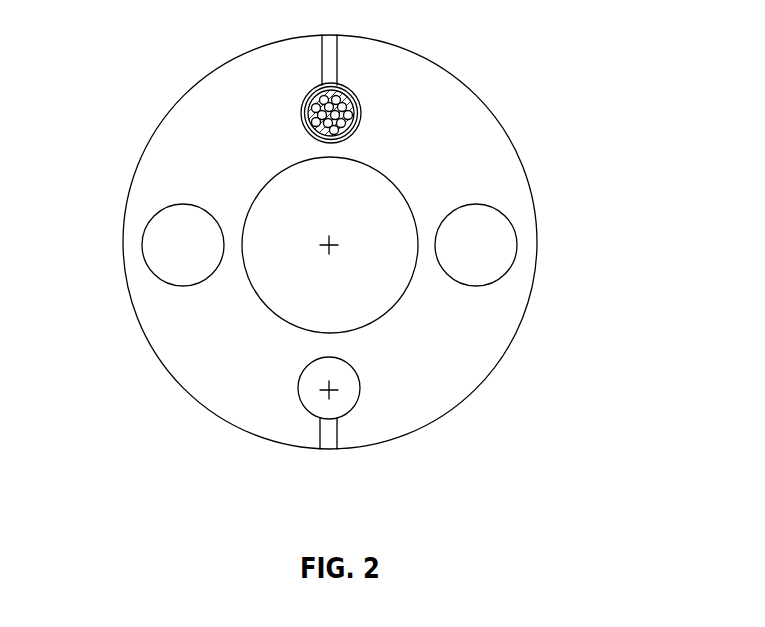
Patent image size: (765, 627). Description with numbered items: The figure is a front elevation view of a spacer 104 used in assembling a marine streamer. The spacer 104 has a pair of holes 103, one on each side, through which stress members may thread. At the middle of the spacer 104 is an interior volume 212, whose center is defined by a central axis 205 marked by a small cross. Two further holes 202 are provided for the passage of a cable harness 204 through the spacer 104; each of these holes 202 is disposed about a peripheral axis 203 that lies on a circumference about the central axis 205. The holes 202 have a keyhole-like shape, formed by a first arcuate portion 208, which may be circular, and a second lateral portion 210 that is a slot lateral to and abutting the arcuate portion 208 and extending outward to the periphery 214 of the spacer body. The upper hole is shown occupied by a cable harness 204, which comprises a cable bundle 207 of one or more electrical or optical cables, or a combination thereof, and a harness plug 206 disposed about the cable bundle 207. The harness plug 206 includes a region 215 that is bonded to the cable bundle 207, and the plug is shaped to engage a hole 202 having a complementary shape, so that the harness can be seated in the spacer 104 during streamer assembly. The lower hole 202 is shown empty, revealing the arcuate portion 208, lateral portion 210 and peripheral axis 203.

The spacer 104 is at (150, 57).
The holes 103 is at (153, 217).
The interior volume 212 is at (363, 304).
The central axis 205 is at (327, 246).
The holes 202 is at (304, 93).
The cable harness 204 is at (364, 117).
The harness plug 206 is at (352, 93).
The cable bundle 207 is at (305, 128).
The region 215 is at (322, 102).
The arcuate portion 208 is at (363, 386).
The peripheral axis 203 is at (326, 388).
The lateral portion 210 is at (332, 430).
The periphery 214 is at (332, 455).